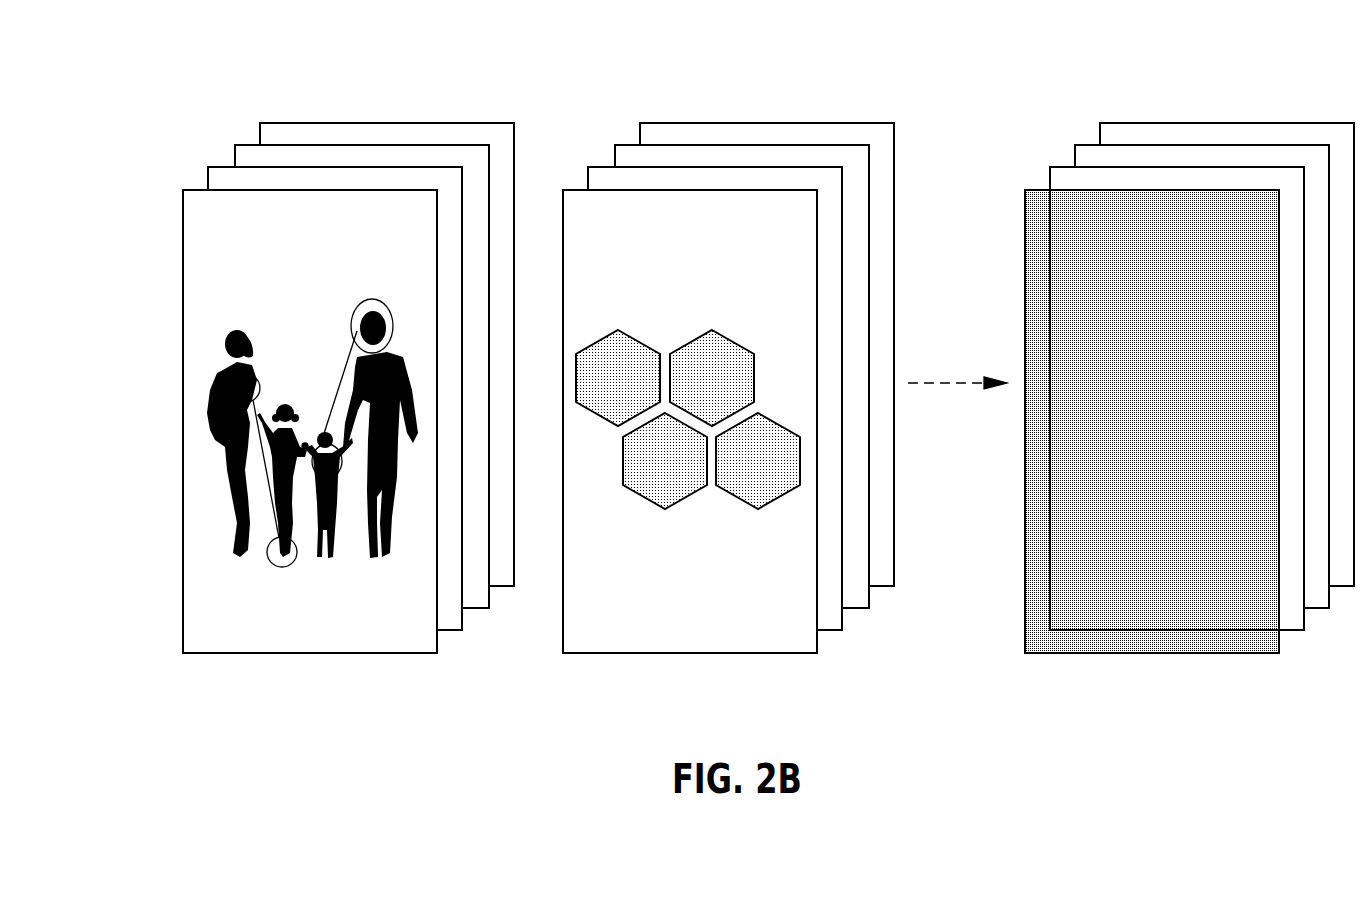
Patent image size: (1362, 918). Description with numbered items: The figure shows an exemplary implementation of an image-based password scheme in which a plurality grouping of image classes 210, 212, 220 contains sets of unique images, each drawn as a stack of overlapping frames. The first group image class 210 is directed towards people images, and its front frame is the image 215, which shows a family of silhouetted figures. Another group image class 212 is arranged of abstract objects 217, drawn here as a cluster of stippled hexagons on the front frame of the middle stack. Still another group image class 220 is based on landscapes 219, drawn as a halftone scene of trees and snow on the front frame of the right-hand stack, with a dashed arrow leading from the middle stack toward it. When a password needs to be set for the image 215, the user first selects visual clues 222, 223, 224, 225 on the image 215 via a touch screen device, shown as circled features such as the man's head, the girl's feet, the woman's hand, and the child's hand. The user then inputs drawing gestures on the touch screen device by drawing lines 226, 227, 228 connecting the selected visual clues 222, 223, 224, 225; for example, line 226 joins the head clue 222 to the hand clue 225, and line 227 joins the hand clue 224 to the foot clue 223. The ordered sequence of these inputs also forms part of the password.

The first group image class 210 is at (387, 123).
The image 215 is at (203, 222).
The group image class 212 is at (777, 123).
The abstract objects 217 is at (795, 252).
The landscapes 219 is at (1093, 213).
The group image class 220 is at (1268, 123).
The visual clue 222 is at (380, 299).
The visual clue 223 is at (283, 567).
The visual clue 224 is at (232, 384).
The visual clue 225 is at (347, 478).
The line 226 is at (337, 393).
The line 227 is at (263, 480).
The line 228 is at (305, 443).